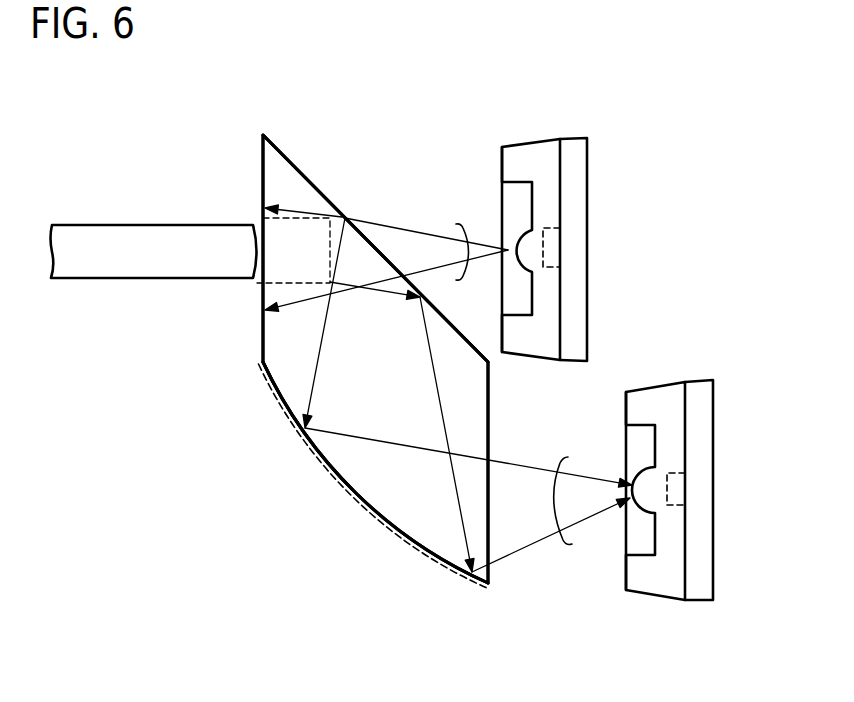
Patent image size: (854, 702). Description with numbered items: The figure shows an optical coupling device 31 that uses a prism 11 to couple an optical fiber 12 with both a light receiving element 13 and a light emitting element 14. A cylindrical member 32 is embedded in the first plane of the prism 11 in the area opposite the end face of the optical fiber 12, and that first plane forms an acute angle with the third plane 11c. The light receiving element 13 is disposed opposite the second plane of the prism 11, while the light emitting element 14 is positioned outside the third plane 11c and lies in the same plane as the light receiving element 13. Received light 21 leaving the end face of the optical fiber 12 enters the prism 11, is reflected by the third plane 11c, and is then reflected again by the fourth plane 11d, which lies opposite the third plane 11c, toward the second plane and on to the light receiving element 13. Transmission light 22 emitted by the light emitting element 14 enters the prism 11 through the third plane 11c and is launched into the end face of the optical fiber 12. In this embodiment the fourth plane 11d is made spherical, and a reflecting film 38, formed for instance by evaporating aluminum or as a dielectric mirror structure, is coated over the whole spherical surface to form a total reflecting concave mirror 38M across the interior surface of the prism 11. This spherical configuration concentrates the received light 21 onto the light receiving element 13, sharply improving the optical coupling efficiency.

The prism 11 is at (278, 337).
The third plane 11c is at (300, 172).
The fourth plane 11d is at (363, 503).
The optical fiber 12 is at (135, 225).
The light receiving element 13 is at (677, 470).
The light emitting element 14 is at (557, 222).
The received light 21 is at (570, 546).
The transmission light 22 is at (462, 226).
The optical coupling device 31 is at (286, 137).
The cylindrical member 32 is at (285, 270).
The reflecting film 38 is at (318, 460).
The total reflecting concave mirror 38M is at (413, 540).